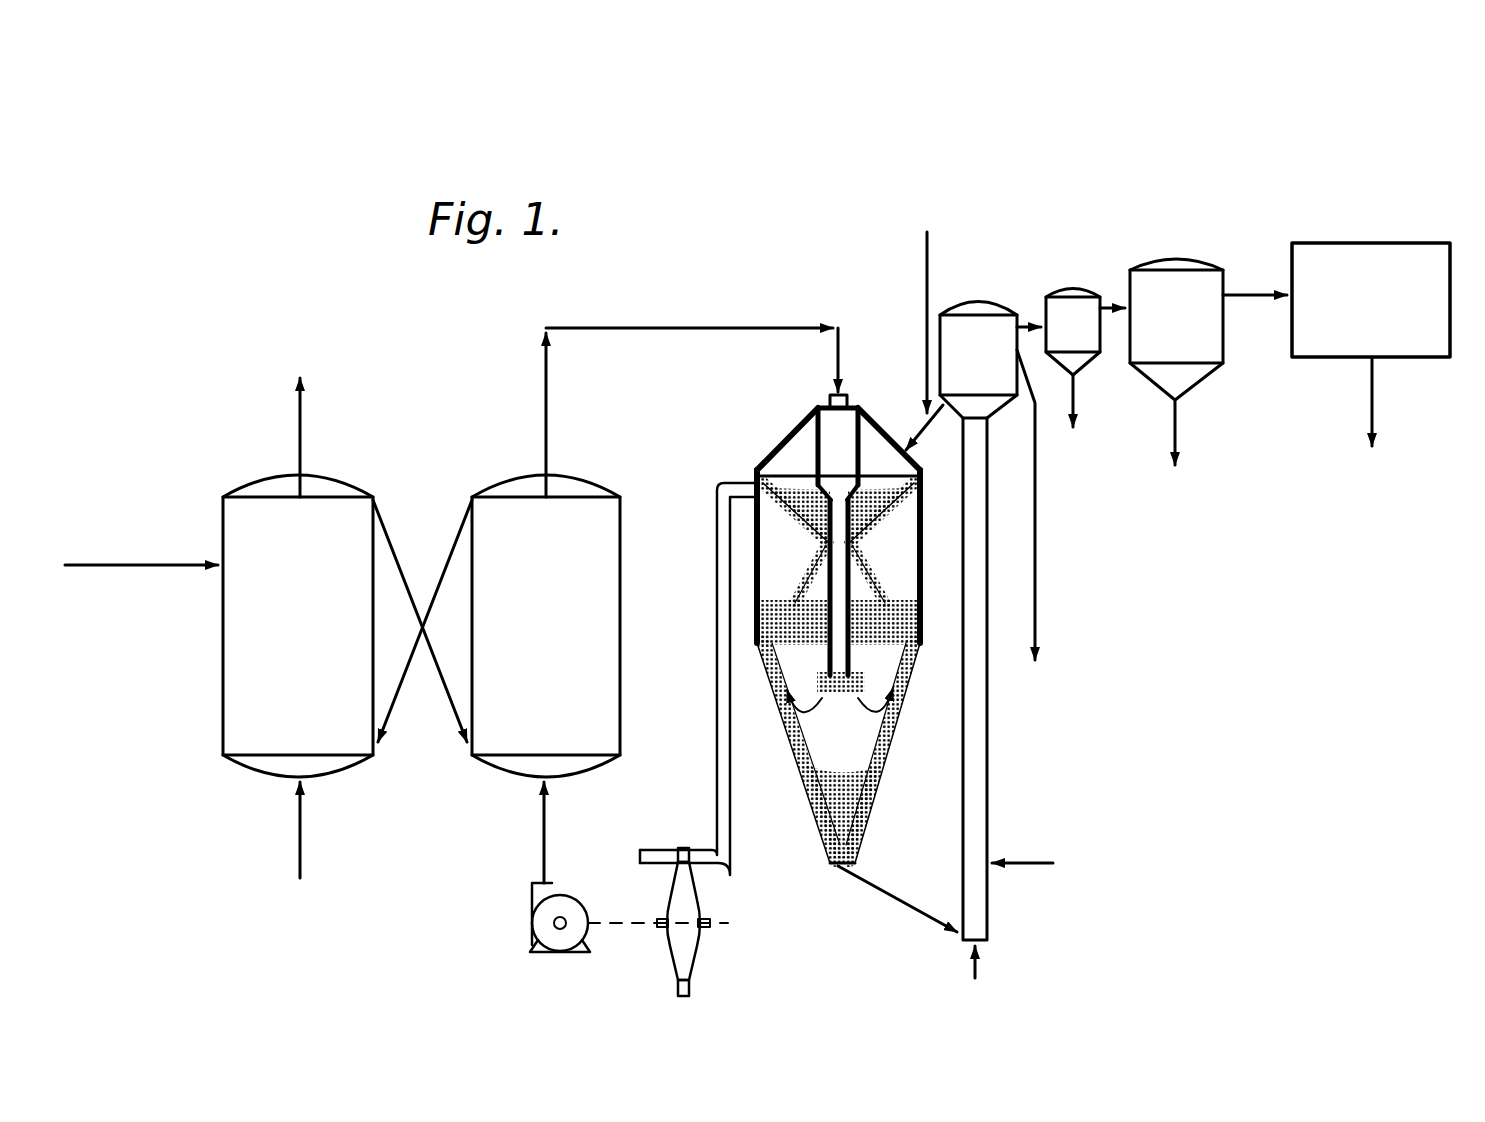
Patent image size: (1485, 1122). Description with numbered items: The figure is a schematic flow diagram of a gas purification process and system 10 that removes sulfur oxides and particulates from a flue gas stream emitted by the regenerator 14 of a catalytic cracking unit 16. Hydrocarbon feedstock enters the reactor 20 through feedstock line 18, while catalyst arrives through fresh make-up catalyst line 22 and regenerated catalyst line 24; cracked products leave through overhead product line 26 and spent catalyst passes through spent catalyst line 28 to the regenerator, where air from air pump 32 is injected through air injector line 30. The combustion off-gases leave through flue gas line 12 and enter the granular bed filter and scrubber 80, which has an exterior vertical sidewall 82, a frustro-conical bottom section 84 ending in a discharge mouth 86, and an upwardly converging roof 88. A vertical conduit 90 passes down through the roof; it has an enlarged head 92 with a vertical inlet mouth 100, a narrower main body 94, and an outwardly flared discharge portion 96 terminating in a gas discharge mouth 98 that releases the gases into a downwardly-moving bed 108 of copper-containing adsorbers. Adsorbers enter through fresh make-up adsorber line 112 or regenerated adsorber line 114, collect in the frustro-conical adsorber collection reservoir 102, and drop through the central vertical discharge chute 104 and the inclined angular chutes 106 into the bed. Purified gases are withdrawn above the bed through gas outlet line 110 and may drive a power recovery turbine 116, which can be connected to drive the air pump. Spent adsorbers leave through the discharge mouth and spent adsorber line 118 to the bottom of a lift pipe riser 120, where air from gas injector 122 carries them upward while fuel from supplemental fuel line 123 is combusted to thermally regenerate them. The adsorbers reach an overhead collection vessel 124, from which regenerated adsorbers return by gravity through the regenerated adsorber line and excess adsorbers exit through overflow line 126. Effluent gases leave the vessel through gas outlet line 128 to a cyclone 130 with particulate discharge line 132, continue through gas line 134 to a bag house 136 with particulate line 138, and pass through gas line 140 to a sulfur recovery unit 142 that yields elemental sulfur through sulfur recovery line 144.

The gas purification process and system 10 is at (629, 271).
The flue gas line 12 is at (546, 400).
The regenerator 14 is at (597, 663).
The catalytic cracking unit 16 is at (407, 631).
The feedstock line 18 is at (300, 836).
The reactor 20 is at (250, 652).
The fresh make-up catalyst line 22 is at (127, 567).
The regenerated catalyst line 24 is at (452, 545).
The overhead product line 26 is at (300, 426).
The spent catalyst line 28 is at (448, 690).
The air injector line 30 is at (544, 831).
The air pump 32 is at (532, 920).
The granular bed filter and scrubber 80 is at (852, 619).
The exterior vertical sidewall 82 is at (920, 552).
The frustro-conical bottom section 84 is at (887, 757).
The discharge mouth 86 is at (851, 857).
The roof 88 is at (870, 460).
The vertical conduit 90 is at (860, 420).
The enlarged head 92 is at (818, 425).
The main body 94 is at (870, 533).
The outwardly flared discharge portion 96 is at (770, 677).
The gas outlet and discharge mouth 98 is at (840, 697).
The vertical inlet mouth 100 is at (830, 400).
The adsorber collection reservoir 102 is at (887, 507).
The central vertical discharge chute 104 is at (900, 582).
The inclined angular chutes 106 is at (917, 600).
The downwardly-moving bed 108 is at (920, 648).
The gas outlet line 110 is at (718, 493).
The fresh make-up adsorber line 112 is at (927, 262).
The regenerated adsorber line 114 is at (913, 450).
The power recovery turbine 116 is at (690, 887).
The spent adsorber line 118 is at (907, 905).
The lift pipe riser 120 is at (987, 795).
The gas injector 122 is at (975, 962).
The supplemental fuel line 123 is at (1025, 863).
The overhead collection vessel 124 is at (967, 306).
The overflow line 126 is at (1035, 617).
The gas outlet line 128 is at (1030, 323).
The cyclone 130 is at (1068, 294).
The particulate discharge line 132 is at (1075, 415).
The gas line 134 is at (1113, 302).
The bag house 136 is at (1165, 268).
The particulate line 138 is at (1175, 432).
The gas line 140 is at (1237, 290).
The sulfur recovery unit 142 is at (1362, 247).
The sulfur recovery line 144 is at (1372, 405).